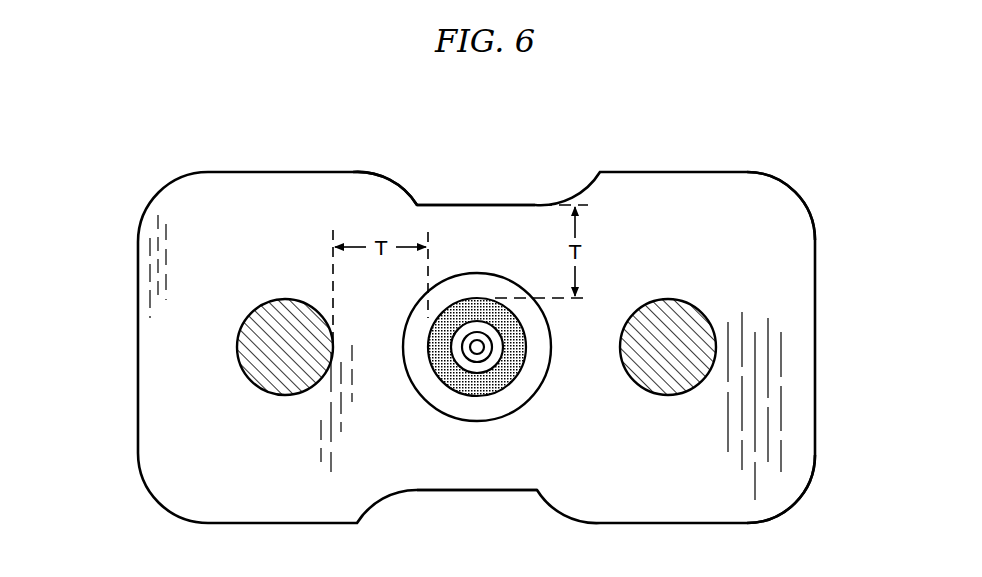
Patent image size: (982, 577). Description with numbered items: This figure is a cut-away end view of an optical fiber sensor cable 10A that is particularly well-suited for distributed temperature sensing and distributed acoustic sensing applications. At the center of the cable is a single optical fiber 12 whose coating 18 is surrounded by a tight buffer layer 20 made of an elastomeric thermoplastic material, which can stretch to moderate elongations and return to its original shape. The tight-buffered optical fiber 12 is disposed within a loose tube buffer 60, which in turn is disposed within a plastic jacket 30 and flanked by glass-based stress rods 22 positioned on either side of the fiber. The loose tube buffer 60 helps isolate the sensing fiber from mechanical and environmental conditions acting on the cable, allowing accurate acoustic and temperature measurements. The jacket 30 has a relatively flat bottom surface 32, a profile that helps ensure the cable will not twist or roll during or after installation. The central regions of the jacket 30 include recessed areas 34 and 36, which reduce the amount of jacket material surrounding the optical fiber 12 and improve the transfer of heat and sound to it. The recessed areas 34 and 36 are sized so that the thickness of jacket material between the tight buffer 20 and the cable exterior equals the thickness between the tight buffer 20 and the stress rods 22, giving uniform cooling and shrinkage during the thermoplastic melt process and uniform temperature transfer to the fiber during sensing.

The sensor cable 10A is at (104, 246).
The optical fiber 12 is at (493, 192).
The coating 18 is at (487, 365).
The tight buffer layer 20 is at (443, 368).
The stress rods 22 is at (237, 347).
The plastic jacket 30 is at (773, 216).
The bottom surface 32 is at (662, 524).
The recessed area 34 is at (438, 205).
The recessed area 36 is at (458, 491).
The loose tube buffer 60 is at (487, 282).